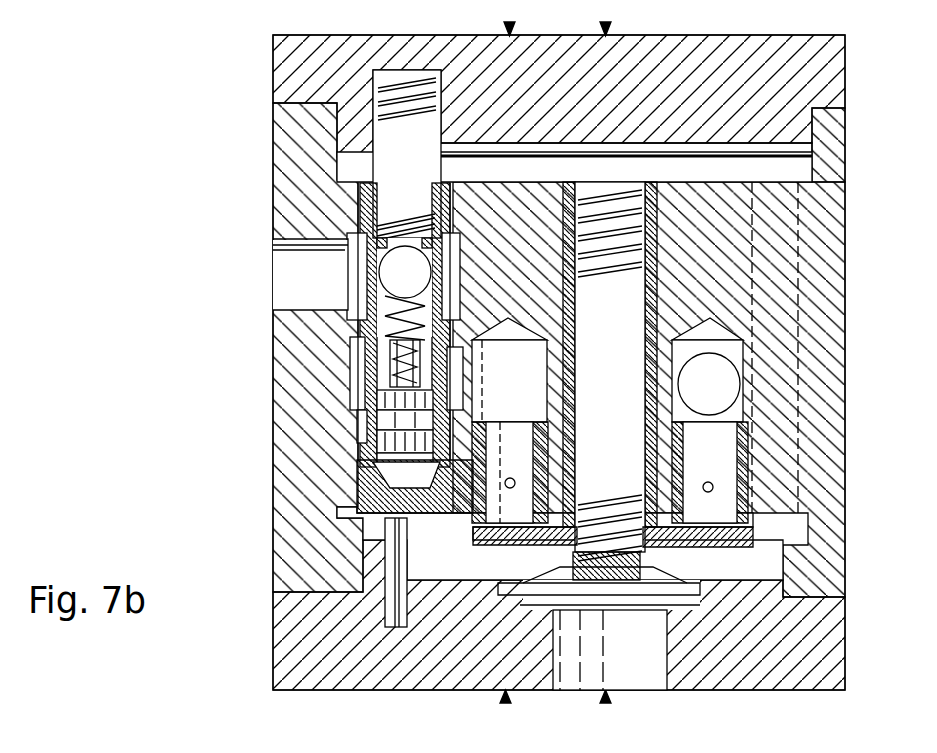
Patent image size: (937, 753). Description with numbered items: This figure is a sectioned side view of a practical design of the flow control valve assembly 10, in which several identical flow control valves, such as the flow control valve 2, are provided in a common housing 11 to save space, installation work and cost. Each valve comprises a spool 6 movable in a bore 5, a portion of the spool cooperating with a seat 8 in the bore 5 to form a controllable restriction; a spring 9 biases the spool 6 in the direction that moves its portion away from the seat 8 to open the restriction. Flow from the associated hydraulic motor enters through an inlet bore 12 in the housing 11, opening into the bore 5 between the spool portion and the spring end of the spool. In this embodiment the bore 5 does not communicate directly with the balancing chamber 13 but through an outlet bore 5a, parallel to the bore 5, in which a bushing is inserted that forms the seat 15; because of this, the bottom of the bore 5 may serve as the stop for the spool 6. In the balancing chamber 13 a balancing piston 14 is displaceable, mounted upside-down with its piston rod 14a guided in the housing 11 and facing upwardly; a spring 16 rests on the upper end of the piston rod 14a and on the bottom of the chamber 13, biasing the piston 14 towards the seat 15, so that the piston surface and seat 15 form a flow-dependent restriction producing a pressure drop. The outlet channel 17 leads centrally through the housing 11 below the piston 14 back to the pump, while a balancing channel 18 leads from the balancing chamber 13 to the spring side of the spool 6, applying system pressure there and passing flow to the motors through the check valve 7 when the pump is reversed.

The flow control valve assembly 10 is at (250, 145).
The housing 11 is at (822, 276).
The inlet bore 12 is at (303, 234).
The flow control valve 2 is at (350, 305).
The check valve 7 is at (364, 272).
The seat 8 is at (355, 327).
The spool 6 is at (358, 360).
The bore 5 is at (359, 442).
The outlet bore 5a is at (493, 405).
The spring 9 is at (398, 112).
The balancing channel 18 is at (528, 149).
The piston rod 14a is at (658, 225).
The spring 16 is at (594, 262).
The balancing chamber 13 is at (768, 579).
The seat 15 is at (472, 520).
The balancing piston 14 is at (672, 540).
The channel 17 is at (667, 658).